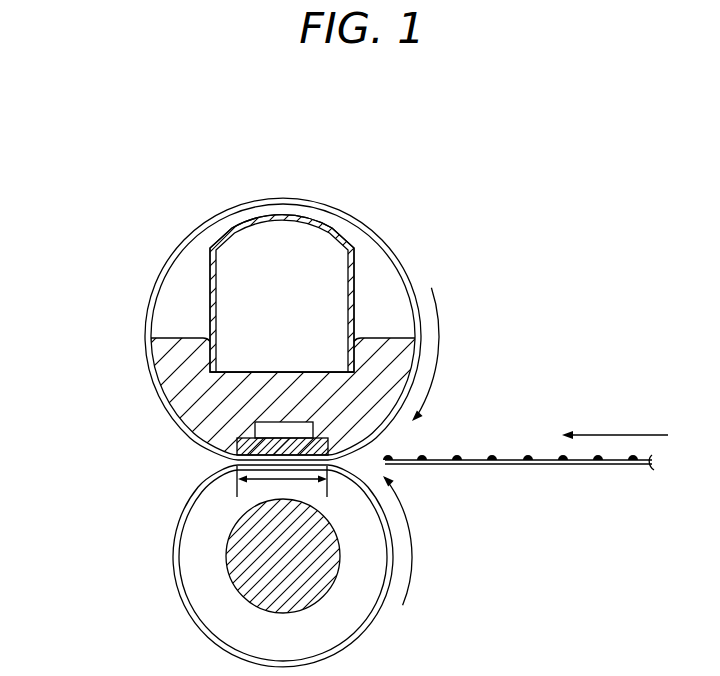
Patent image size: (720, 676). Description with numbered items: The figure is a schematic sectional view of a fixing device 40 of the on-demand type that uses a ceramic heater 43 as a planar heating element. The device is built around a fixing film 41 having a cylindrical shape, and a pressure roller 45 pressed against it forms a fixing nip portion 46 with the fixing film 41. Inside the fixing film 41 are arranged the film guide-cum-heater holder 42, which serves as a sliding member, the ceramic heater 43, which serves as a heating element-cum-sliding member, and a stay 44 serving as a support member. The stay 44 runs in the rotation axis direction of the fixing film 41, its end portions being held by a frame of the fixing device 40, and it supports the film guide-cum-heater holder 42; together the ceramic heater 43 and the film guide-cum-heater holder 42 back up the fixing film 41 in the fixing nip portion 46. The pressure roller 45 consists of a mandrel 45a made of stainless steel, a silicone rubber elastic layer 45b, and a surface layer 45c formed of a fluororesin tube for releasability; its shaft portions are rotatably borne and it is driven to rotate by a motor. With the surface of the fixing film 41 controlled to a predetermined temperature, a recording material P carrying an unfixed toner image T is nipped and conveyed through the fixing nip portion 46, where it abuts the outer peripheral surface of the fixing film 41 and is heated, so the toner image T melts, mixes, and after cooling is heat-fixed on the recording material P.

The fixing device 40 is at (400, 204).
The fixing film 41 is at (187, 240).
The film guide-cum-heater holder 42 is at (378, 343).
The ceramic heater 43 is at (415, 404).
The stay 44 is at (212, 302).
The pressure roller 45 is at (88, 511).
The mandrel 45a is at (230, 527).
The silicone rubber elastic layer 45b is at (187, 557).
The surface layer 45c is at (172, 585).
The fixing nip portion 46 is at (233, 495).
The toner image T is at (458, 456).
The recording material P is at (513, 465).